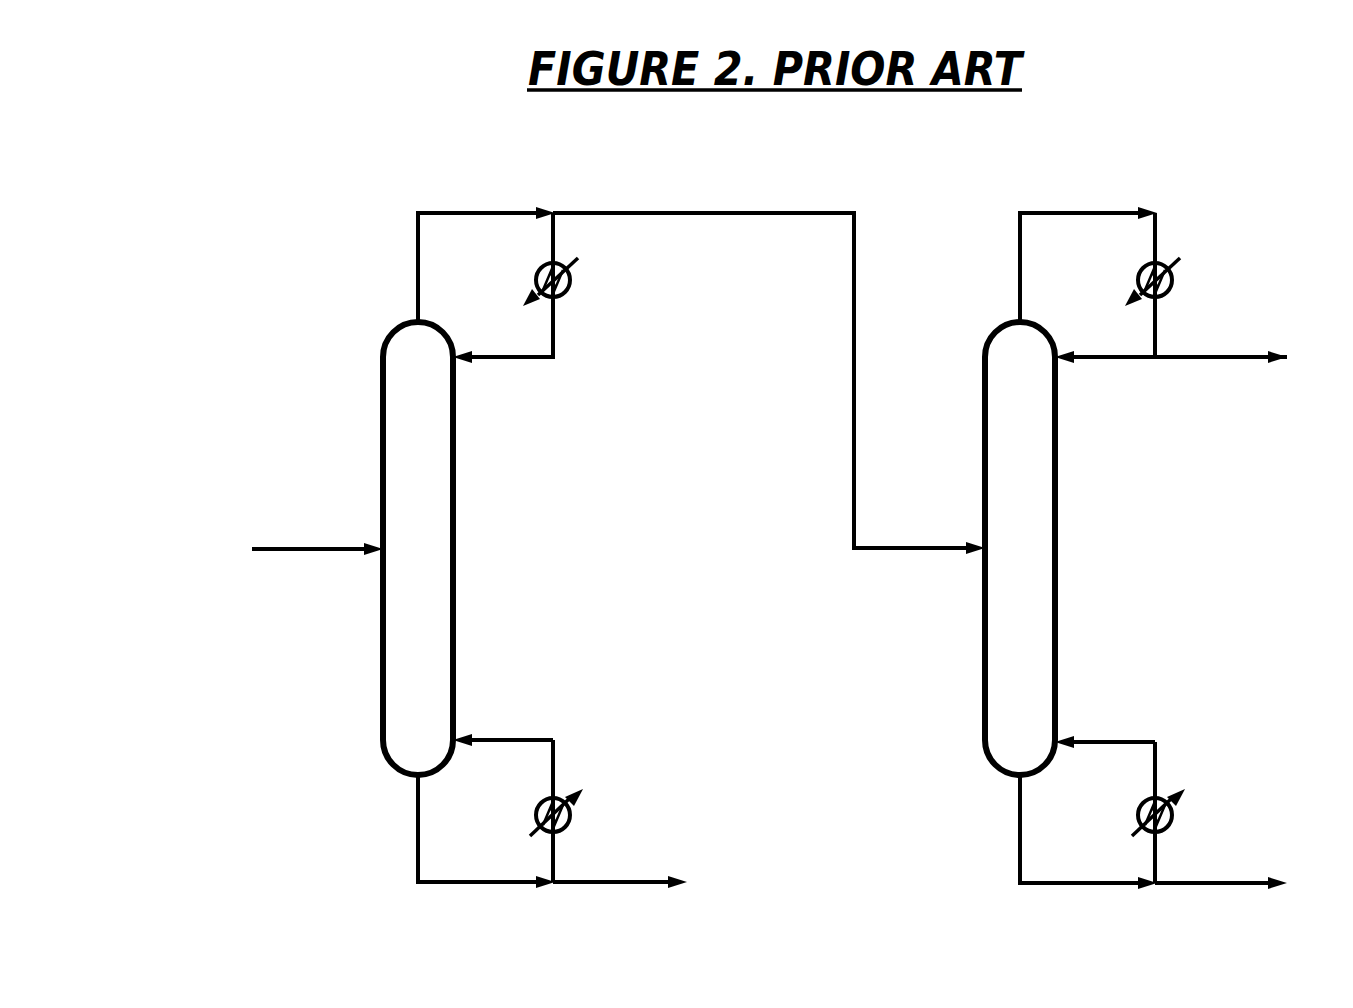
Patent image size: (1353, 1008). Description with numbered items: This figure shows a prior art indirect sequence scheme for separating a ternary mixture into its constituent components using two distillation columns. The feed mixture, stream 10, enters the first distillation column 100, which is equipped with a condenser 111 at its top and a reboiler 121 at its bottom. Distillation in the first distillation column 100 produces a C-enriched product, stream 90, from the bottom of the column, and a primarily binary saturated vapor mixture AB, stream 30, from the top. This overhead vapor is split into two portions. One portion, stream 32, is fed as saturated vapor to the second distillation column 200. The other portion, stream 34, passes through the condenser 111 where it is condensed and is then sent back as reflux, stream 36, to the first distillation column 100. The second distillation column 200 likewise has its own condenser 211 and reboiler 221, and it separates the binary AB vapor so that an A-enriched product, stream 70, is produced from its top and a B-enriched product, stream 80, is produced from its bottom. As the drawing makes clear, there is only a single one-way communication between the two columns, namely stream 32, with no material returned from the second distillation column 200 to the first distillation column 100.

The feed mixture stream 10 is at (298, 551).
The binary vapor mixture AB stream 30 is at (418, 260).
The vapor feed stream to second column 32 is at (684, 214).
The vapor portion to be condensed 34 is at (553, 236).
The reflux stream 36 is at (518, 357).
The A-enriched product stream 70 is at (1200, 357).
The B-enriched product stream 80 is at (1184, 884).
The C-enriched product stream 90 is at (644, 883).
The first distillation column 100 is at (455, 549).
The condenser 111 is at (572, 285).
The reboiler 121 is at (572, 812).
The second distillation column 200 is at (1057, 548).
The condenser 211 is at (1174, 282).
The reboiler 221 is at (1174, 812).